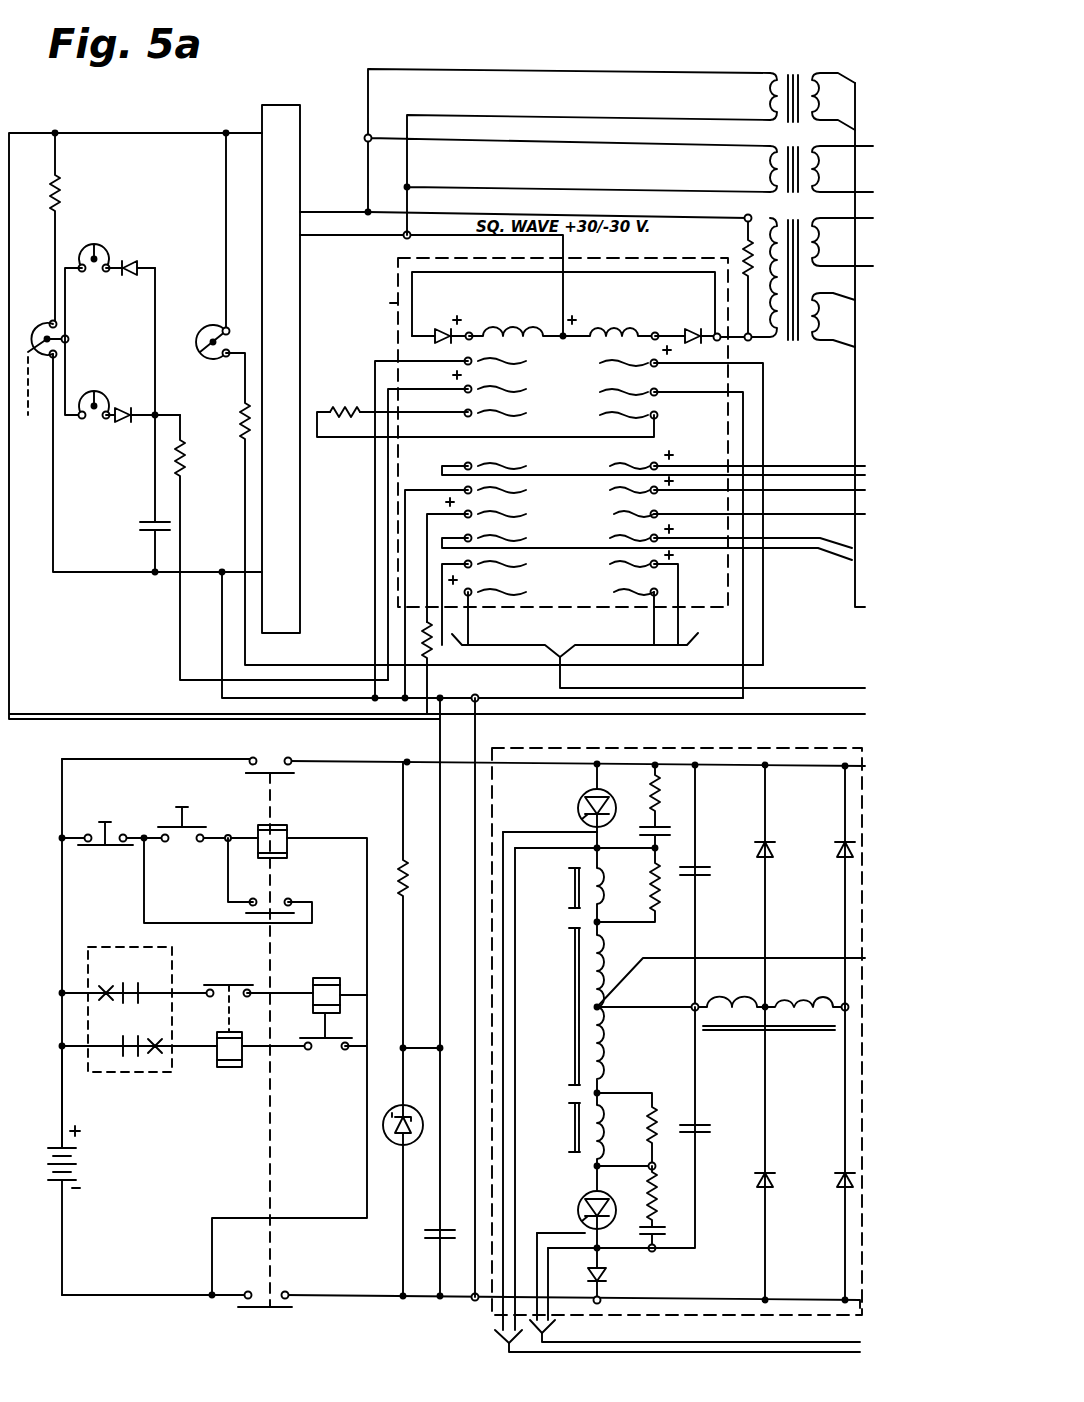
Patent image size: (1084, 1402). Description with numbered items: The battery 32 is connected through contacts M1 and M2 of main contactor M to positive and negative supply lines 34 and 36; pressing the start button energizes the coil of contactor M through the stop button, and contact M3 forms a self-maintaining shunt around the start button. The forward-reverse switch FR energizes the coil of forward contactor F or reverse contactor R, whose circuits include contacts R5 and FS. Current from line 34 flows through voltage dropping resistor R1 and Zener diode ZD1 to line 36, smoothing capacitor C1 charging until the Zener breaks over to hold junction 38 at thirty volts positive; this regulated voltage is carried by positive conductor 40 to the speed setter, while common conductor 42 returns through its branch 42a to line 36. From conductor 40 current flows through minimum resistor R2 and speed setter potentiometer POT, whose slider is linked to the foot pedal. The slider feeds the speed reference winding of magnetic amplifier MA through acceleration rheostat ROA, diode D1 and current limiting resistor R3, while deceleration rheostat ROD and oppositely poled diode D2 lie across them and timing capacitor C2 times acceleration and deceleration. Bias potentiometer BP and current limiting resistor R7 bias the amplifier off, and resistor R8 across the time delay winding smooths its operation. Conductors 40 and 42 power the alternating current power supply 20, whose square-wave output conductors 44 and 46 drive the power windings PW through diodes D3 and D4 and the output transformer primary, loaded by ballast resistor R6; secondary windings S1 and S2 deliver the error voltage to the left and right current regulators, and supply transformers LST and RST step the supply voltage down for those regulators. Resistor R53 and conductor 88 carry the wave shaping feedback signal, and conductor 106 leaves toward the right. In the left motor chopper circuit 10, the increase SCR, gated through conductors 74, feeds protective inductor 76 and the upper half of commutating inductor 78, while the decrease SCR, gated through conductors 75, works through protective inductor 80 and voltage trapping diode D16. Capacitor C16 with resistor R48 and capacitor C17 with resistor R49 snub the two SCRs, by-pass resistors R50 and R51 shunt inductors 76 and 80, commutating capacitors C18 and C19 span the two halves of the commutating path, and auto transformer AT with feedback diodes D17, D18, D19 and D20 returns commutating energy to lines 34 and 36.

The left motor chopper circuit 10 is at (677, 1020).
The alternating current power supply 20 is at (282, 106).
The 250 volt D.C. battery 32 is at (78, 1162).
The positive supply line 34 is at (358, 754).
The negative supply line 36 is at (362, 1298).
The junction 38 is at (406, 1048).
The positive voltage supply conductor 40 is at (228, 133).
The common conductor 42 is at (104, 567).
The branch of common conductor 42a is at (474, 1194).
The output conductor 44 is at (331, 210).
The output conductor 46 is at (332, 237).
The conductors 74 is at (656, 1352).
The conductors 75 is at (762, 1342).
The protective inductor 76 is at (572, 888).
The commutating inductor 78 is at (572, 985).
The protective inductor 80 is at (572, 1124).
The conductor 88 is at (814, 520).
The output line 106 is at (830, 688).
The minimum resistor R2 is at (62, 196).
The rate of deceleration adjusting rheostat ROD is at (106, 249).
The unidirectional diode D2 is at (128, 275).
The speed setter potentiometer POT is at (40, 324).
The rate of acceleration adjusting rheostat ROA is at (104, 396).
The unidirectional diode D1 is at (128, 423).
The bias potentiometer BP is at (215, 326).
The current limiting resistor R7 is at (240, 412).
The current limiting resistor R3 is at (183, 476).
The timing capacitor C2 is at (135, 523).
The resistor R8 is at (348, 408).
The magnetic amplifier MA is at (380, 302).
The unidirectional diode D3 is at (445, 327).
The power winding PW is at (596, 323).
The unidirectional diode D4 is at (690, 327).
The right supply transformer RST is at (793, 72).
The left supply transformer LST is at (780, 146).
The secondary winding S1 is at (815, 240).
The secondary winding S2 is at (833, 320).
The resistor R6 is at (744, 245).
The resistor R53 is at (432, 666).
The contact of main contactor M1 is at (296, 772).
The main contactor M is at (288, 830).
The contact of main contactor M3 is at (280, 906).
The forward-reverse switch FR is at (126, 947).
The reverse relay contact R5 is at (220, 998).
The forward contactor F is at (311, 982).
The reverse contactor R is at (216, 1064).
The interlock contact FS is at (325, 1042).
The contact of main contactor M2 is at (280, 1295).
The voltage dropping resistor R1 is at (402, 872).
The Zener diode ZD1 is at (392, 1108).
The smoothing capacitor C1 is at (430, 1230).
The resistor R48 is at (662, 794).
The capacitor C16 is at (675, 830).
The by-pass current resistor R50 is at (660, 894).
The commutating capacitor C18 is at (704, 878).
The auto transformer AT is at (758, 1032).
The feedback diode D17 is at (776, 848).
The feedback diode D18 is at (840, 852).
The feedback diode D19 is at (758, 1186).
The diode D20 is at (836, 1186).
The by-pass current resistor R51 is at (672, 1092).
The resistor R49 is at (662, 1202).
The capacitor C17 is at (662, 1240).
The commutating capacitor C19 is at (708, 1126).
The voltage trapping diode D16 is at (607, 1278).